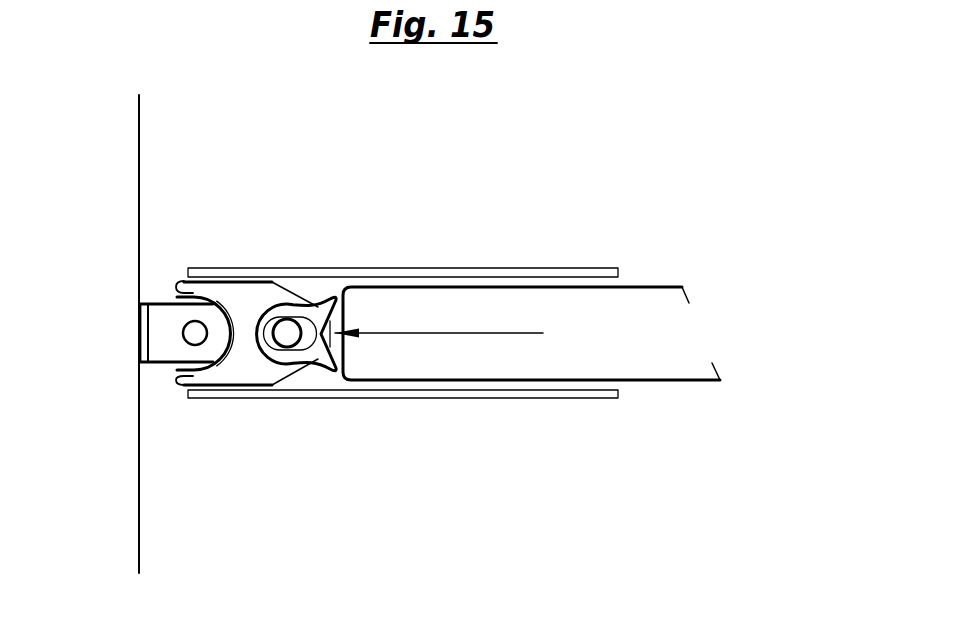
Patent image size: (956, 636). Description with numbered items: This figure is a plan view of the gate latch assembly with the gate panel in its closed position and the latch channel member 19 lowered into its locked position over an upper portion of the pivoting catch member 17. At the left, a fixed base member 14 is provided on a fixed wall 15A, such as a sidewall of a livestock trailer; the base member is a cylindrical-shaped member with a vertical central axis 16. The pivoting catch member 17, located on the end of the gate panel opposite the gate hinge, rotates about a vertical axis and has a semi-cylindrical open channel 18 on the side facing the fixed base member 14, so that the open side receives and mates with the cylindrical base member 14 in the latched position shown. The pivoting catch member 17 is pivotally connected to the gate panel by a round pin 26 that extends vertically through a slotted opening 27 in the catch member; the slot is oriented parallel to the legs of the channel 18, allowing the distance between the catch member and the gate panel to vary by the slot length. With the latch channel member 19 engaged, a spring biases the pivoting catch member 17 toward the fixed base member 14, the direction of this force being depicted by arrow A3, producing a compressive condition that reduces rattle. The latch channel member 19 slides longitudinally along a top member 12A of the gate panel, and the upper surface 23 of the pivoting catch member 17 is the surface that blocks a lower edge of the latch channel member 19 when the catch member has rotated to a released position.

The fixed wall 15A is at (138, 199).
The open channel 18 is at (176, 292).
The latch channel member 19 is at (265, 269).
The slotted opening 27 is at (305, 328).
The arrow A3 is at (432, 333).
The vertical central axis 16 is at (193, 333).
The fixed base member 14 is at (178, 368).
The upper surface 23 is at (237, 368).
The pivoting catch member 17 is at (255, 370).
The round pin 26 is at (288, 343).
The top member 12A is at (650, 367).